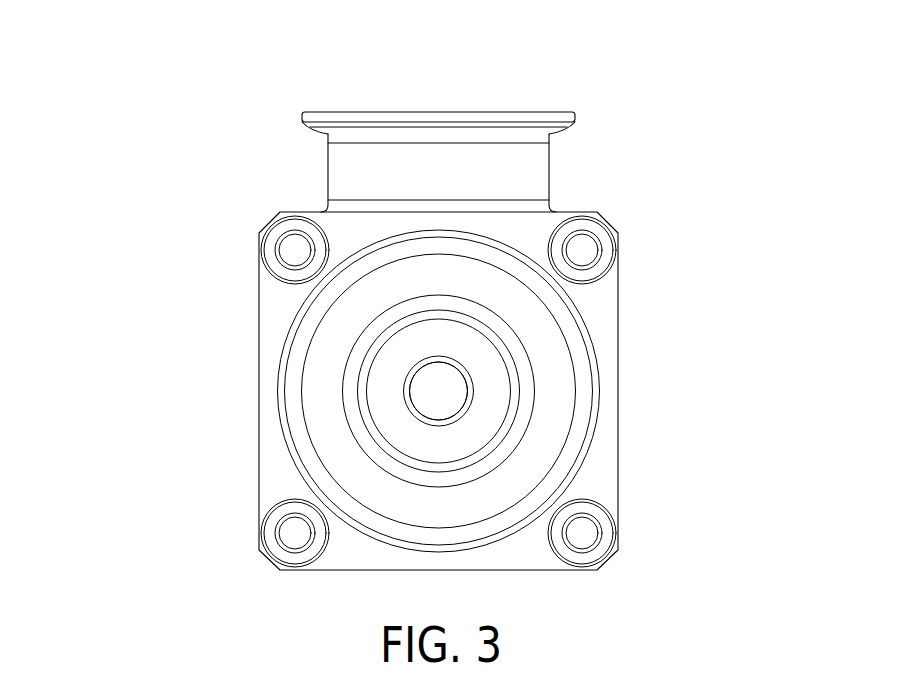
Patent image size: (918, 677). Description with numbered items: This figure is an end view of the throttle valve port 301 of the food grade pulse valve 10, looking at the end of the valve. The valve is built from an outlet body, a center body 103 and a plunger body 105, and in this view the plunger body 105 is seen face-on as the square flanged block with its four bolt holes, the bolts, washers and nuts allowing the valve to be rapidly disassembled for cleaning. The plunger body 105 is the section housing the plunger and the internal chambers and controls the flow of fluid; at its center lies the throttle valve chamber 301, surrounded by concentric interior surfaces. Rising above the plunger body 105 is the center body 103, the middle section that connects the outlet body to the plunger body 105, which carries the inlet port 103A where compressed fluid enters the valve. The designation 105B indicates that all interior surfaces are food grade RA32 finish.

The food grade pulse valve 10 is at (190, 173).
The center body 103 is at (552, 163).
The inlet port 103A is at (553, 108).
The plunger body 105 is at (618, 447).
The food grade RA32 finish indication 105B is at (472, 385).
The throttle valve chamber 301 is at (423, 392).